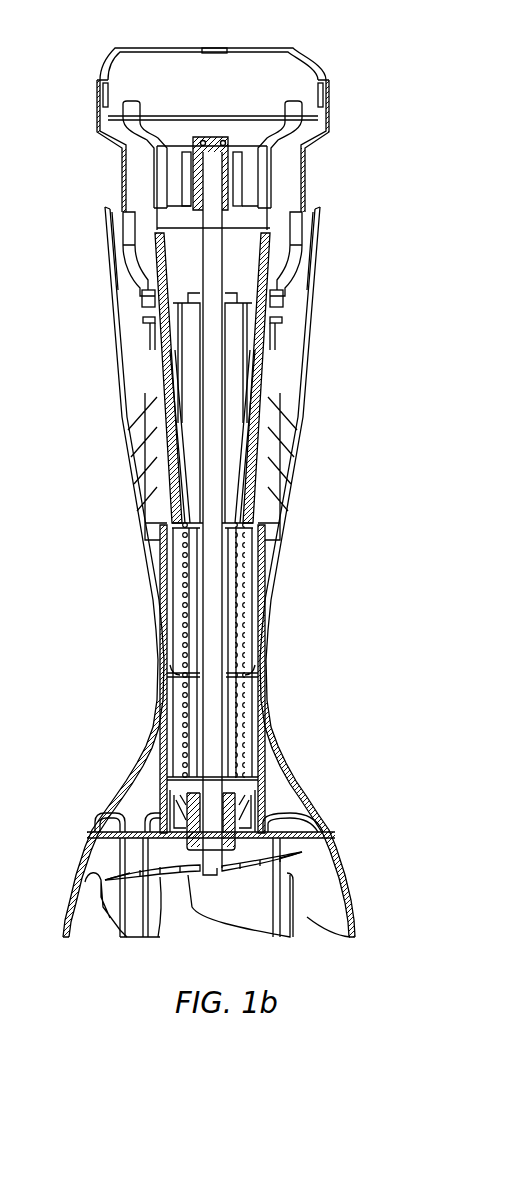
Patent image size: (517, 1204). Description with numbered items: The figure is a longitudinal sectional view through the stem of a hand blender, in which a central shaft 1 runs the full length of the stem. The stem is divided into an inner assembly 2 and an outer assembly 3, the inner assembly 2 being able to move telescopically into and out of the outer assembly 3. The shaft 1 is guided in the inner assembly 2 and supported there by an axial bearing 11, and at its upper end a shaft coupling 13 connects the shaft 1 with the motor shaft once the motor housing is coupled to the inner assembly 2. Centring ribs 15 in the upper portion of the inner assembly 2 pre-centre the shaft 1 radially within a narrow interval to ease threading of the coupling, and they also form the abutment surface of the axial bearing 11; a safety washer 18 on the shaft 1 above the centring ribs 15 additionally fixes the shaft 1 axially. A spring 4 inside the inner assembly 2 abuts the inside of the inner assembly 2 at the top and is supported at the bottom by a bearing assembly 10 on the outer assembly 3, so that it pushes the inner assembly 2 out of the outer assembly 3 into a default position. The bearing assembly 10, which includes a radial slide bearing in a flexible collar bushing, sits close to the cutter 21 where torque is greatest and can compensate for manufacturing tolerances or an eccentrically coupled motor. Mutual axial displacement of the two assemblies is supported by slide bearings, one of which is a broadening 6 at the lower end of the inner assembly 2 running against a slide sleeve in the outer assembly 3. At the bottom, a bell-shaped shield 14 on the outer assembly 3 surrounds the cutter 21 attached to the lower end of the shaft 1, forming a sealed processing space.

The shaft 1 is at (213, 412).
The inner assembly 2 is at (331, 130).
The outer assembly 3 is at (117, 290).
The spring 4 is at (170, 580).
The broadening (slide bearing) 6 is at (167, 671).
The bearing assembly 10 is at (282, 797).
The axial bearing 11 is at (170, 517).
The shaft coupling 13 is at (203, 140).
The shield 14 is at (82, 842).
The centring ribs 15 is at (237, 384).
The safety washer 18 is at (237, 294).
The cutter 21 is at (137, 875).